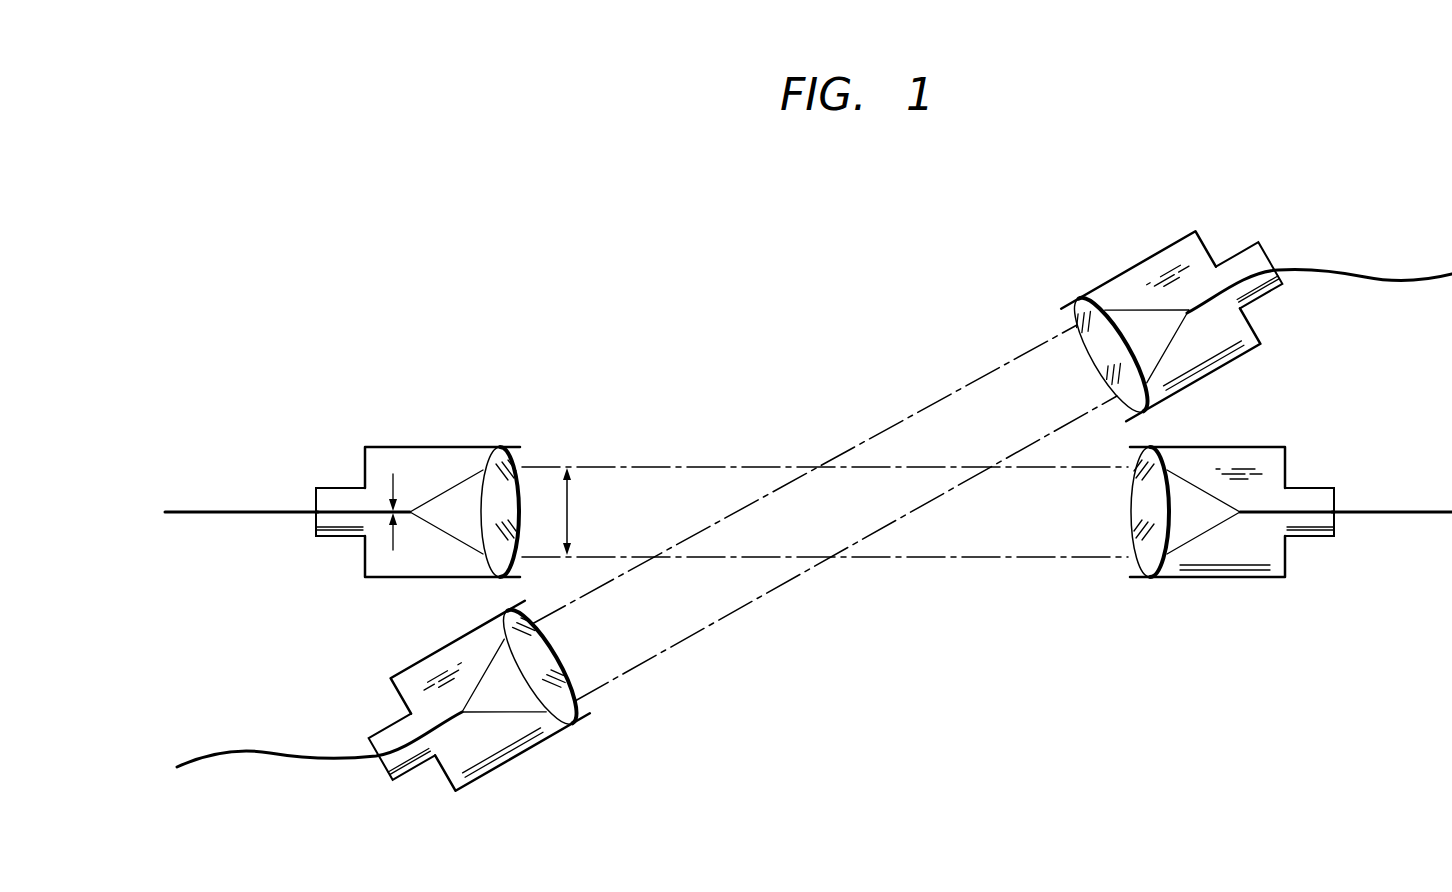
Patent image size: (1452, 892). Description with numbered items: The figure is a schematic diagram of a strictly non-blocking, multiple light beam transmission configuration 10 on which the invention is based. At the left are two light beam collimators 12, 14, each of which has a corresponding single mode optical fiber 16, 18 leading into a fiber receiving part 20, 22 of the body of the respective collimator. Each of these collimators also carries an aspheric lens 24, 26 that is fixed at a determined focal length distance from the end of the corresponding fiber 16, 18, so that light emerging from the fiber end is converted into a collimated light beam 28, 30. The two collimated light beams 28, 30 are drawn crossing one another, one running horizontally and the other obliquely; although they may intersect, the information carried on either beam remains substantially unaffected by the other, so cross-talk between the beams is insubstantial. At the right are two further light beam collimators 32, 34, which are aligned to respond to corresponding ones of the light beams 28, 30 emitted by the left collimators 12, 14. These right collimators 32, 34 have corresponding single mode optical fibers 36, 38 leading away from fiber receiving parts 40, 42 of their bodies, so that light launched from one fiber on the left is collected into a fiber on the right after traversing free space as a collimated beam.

The multiple light beam transmission configuration 10 is at (698, 313).
The light beam collimator 12 is at (445, 445).
The light beam collimator 14 is at (520, 760).
The single mode optical fiber 16 is at (227, 505).
The single mode optical fiber 18 is at (267, 753).
The fiber receiving part 20 is at (340, 537).
The fiber receiving part 22 is at (412, 772).
The aspheric lens 24 is at (522, 462).
The aspheric lens 26 is at (583, 707).
The collimated light beam 28 is at (611, 466).
The collimated light beam 30 is at (793, 583).
The light beam collimator 32 is at (1123, 270).
The light beam collimator 34 is at (1243, 447).
The single mode optical fiber 36 is at (1335, 270).
The single mode optical fiber 38 is at (1420, 508).
The fiber receiving part 40 is at (1232, 255).
The fiber receiving part 42 is at (1302, 543).